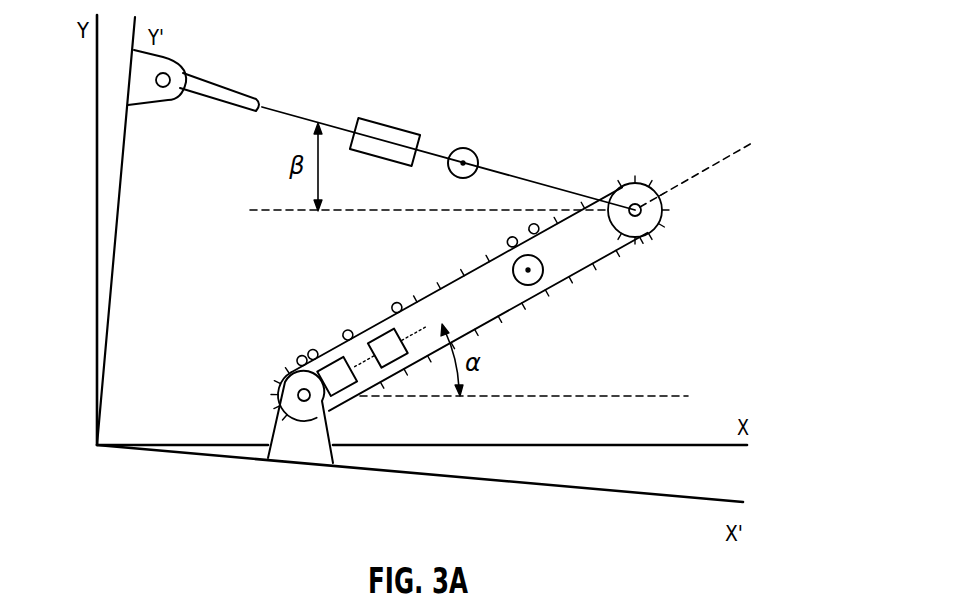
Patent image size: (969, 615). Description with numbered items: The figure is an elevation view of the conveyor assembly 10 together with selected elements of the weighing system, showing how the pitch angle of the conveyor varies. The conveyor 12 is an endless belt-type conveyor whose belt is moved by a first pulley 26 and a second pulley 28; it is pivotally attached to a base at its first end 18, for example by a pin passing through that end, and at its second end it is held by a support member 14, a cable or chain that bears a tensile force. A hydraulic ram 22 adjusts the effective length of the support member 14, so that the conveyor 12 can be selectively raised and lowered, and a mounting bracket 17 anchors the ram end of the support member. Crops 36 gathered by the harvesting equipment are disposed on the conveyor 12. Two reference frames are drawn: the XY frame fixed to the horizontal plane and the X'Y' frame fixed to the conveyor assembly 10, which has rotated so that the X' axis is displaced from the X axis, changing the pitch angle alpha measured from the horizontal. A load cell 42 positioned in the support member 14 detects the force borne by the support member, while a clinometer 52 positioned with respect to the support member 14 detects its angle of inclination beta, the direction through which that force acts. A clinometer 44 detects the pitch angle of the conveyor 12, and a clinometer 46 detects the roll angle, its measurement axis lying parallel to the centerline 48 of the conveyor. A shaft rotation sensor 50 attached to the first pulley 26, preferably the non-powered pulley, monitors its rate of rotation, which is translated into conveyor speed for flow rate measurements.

The conveyor assembly 10 is at (670, 259).
The conveyor 12 is at (573, 254).
The support member 14 is at (298, 117).
The mounting bracket 17 is at (138, 87).
The first end 18 is at (303, 403).
The hydraulic ram 22 is at (222, 92).
The first pulley 26 is at (283, 380).
The second pulley 28 is at (657, 213).
The crops 36 is at (527, 226).
The load cell 42 is at (390, 126).
The clinometer 44 is at (540, 285).
The clinometer 46 is at (383, 338).
The centerline 48 is at (713, 165).
The shaft rotation sensor 50 is at (335, 375).
The clinometer 52 is at (467, 147).